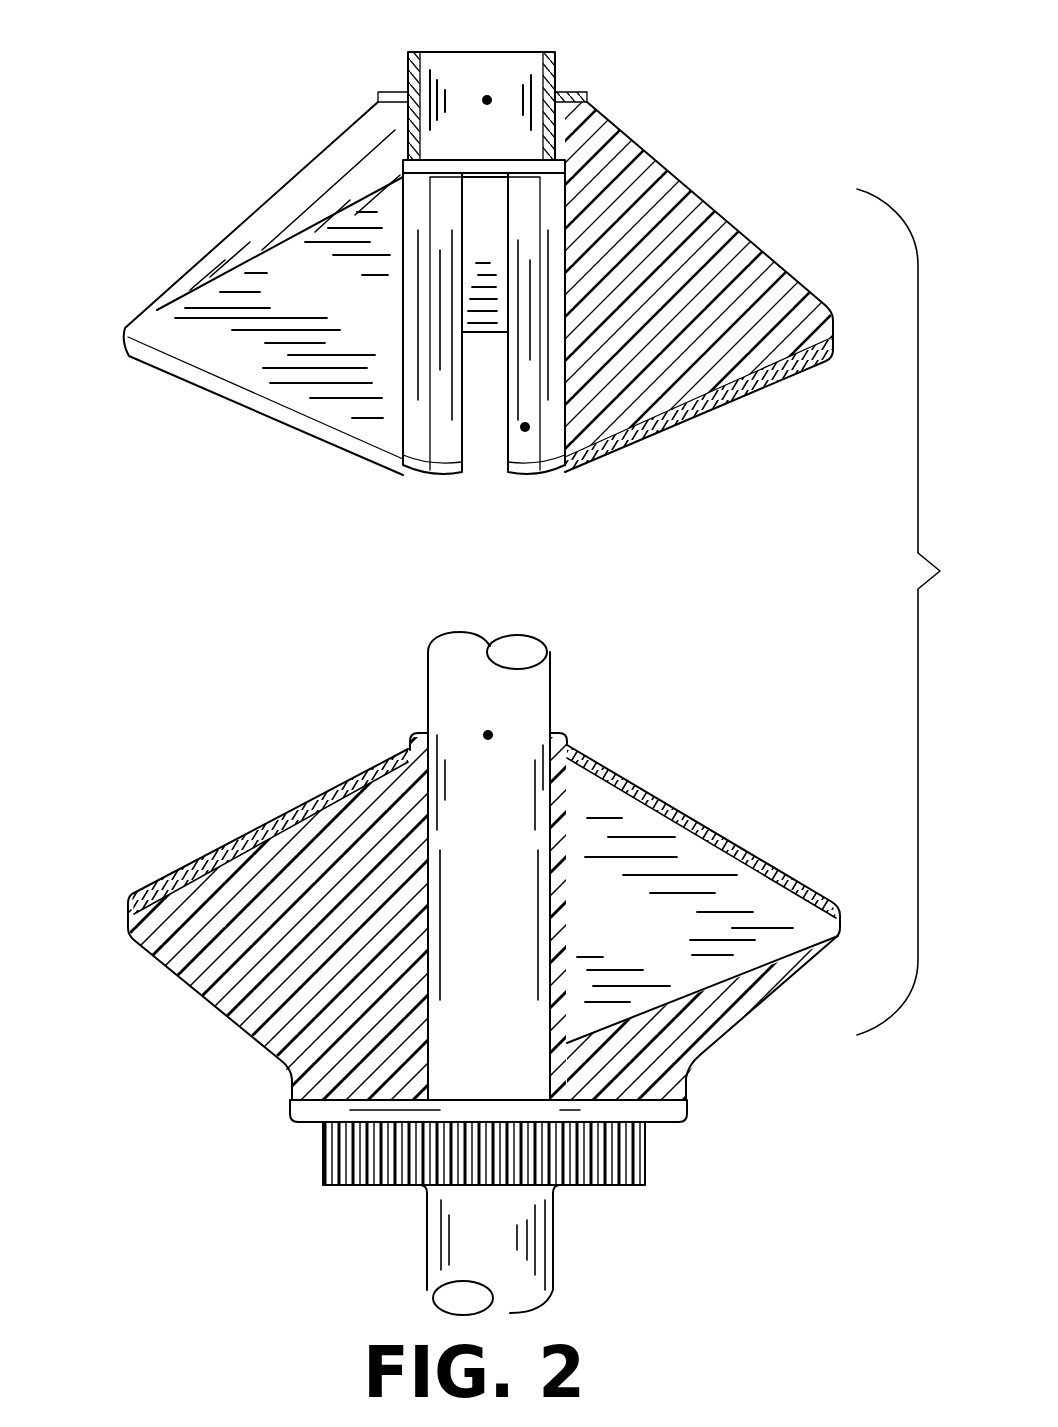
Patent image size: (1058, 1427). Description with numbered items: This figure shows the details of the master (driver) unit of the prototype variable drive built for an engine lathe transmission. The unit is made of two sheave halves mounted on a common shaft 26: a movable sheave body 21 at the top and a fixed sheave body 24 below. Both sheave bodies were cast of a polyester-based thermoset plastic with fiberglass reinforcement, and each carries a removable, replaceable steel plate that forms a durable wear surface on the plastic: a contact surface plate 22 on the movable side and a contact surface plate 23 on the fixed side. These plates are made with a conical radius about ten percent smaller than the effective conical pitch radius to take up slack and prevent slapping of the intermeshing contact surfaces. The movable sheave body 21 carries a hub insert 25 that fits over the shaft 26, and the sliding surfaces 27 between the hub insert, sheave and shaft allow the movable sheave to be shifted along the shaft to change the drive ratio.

The movable sheave body 21 is at (657, 162).
The contact surface plate (movable side) 22 is at (670, 432).
The contact surface plate (fixed side) 23 is at (323, 787).
The fixed sheave body 24 is at (253, 1043).
The hub insert 25 is at (483, 52).
The shaft 26 is at (550, 695).
The sliding surfaces 27 is at (487, 100).